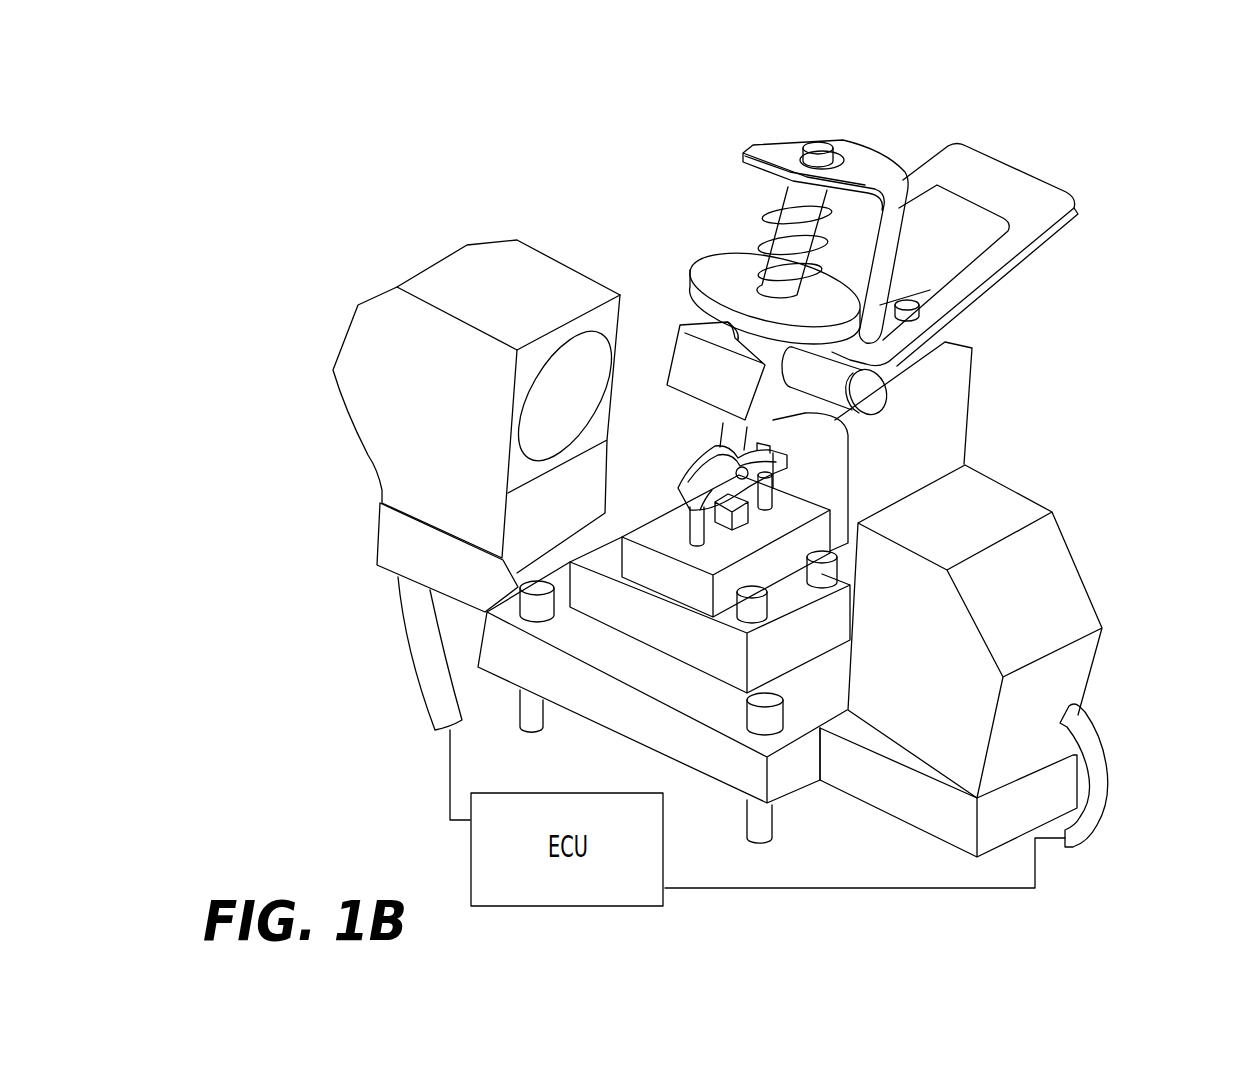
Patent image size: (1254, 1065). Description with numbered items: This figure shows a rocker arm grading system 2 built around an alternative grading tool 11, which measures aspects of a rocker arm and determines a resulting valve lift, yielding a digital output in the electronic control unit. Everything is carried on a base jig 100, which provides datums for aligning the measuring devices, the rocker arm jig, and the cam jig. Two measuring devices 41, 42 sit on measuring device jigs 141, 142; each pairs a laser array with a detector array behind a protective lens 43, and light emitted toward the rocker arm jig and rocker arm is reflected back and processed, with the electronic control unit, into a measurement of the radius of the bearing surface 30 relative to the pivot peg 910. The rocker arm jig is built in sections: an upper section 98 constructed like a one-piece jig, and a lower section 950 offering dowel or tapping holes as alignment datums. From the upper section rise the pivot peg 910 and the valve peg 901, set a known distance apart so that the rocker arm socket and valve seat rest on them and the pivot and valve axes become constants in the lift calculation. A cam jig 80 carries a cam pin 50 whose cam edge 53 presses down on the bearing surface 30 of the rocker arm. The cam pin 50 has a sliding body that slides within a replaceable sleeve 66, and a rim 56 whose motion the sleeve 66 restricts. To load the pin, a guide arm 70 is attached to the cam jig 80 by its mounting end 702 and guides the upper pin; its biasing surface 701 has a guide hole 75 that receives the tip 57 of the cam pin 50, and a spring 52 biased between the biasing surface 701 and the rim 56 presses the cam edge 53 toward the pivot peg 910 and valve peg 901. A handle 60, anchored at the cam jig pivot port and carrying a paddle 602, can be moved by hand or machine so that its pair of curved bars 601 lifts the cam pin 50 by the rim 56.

The grading tool 11 is at (1175, 88).
The rocker arm grading system 2 is at (547, 105).
The measuring device 41 is at (481, 396).
The lens 43 is at (592, 353).
The measuring device jig 141 is at (380, 553).
The measuring device 42 is at (881, 588).
The measuring device jig 142 is at (873, 797).
The base jig 100 is at (603, 718).
The lower section 950 is at (658, 637).
The upper section 98 is at (663, 577).
The valve peg 901 is at (684, 522).
The bearing surface 30 is at (697, 461).
The cam edge 53 is at (740, 443).
The pivot peg 910 is at (786, 488).
The sleeve 66 is at (727, 332).
The curved bars 601 is at (685, 323).
The rim 56 is at (700, 285).
The spring 52 is at (770, 270).
The cam pin 50 is at (763, 190).
The tip 57 is at (817, 142).
The biasing surface 701 is at (768, 145).
The guide hole 75 is at (840, 162).
The guide arm 70 is at (828, 205).
The handle 60 is at (975, 243).
The paddle 602 is at (1045, 216).
The mounting end 702 is at (910, 300).
The cam jig 80 is at (958, 372).